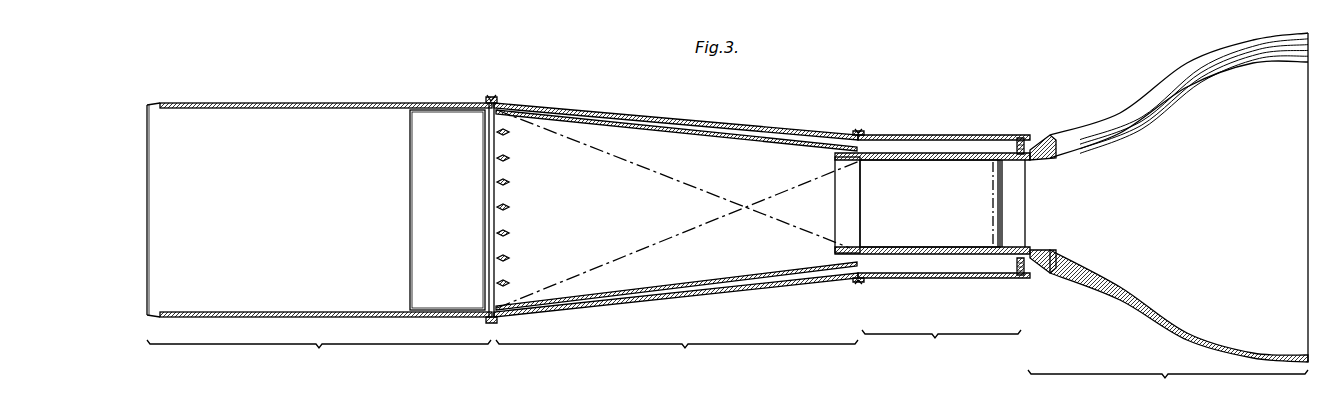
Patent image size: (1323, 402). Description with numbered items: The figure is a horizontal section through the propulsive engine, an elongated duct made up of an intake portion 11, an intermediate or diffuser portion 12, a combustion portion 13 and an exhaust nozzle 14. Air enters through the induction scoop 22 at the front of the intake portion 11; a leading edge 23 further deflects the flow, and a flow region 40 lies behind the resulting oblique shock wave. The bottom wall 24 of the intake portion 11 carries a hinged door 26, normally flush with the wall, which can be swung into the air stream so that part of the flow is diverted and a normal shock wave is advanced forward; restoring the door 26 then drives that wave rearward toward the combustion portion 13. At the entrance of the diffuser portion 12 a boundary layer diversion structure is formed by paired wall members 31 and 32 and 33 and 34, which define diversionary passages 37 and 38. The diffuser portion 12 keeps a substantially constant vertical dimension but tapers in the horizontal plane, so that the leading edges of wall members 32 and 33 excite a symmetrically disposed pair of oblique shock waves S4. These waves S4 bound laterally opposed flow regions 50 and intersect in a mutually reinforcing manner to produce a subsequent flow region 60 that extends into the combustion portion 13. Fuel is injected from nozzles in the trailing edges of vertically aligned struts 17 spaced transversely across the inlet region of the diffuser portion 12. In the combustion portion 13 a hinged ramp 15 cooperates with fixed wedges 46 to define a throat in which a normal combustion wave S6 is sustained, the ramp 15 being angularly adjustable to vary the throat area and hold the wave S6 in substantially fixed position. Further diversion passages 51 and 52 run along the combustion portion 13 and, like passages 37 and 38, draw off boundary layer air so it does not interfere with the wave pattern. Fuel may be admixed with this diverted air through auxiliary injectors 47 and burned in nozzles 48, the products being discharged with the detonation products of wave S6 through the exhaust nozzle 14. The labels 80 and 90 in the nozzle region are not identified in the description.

The intake portion 11 is at (319, 353).
The intermediate or diffuser portion 12 is at (677, 353).
The combustion portion 13 is at (941, 346).
The exhaust nozzle 14 is at (1168, 385).
The hinged ramp 15 is at (921, 208).
The vertically aligned struts 17 is at (509, 157).
The induction scoop 22 is at (316, 103).
The leading edge 23 is at (146, 181).
The bottom wall 24 is at (165, 221).
The hinged door 26 is at (412, 230).
The wall member 31 is at (598, 103).
The wall member 32 is at (645, 128).
The wall member 33 is at (650, 292).
The wall member 34 is at (648, 308).
The diversionary passage 37 is at (745, 110).
The diversionary passage 38 is at (760, 286).
The flow region 40 is at (604, 221).
The fixed wedges 46 is at (992, 168).
The auxiliary injectors 47 is at (1017, 143).
The nozzles 48 is at (1046, 138).
The flow regions 50 is at (754, 173).
The diversion passage 51 is at (930, 140).
The diversion passage 52 is at (942, 273).
The flow region 60 is at (827, 218).
The nozzle throat region 80 is at (1094, 216).
The nozzle exit plane 90 is at (1300, 211).
The oblique shock waves S4 is at (676, 196).
The normal wave S6 is at (992, 198).